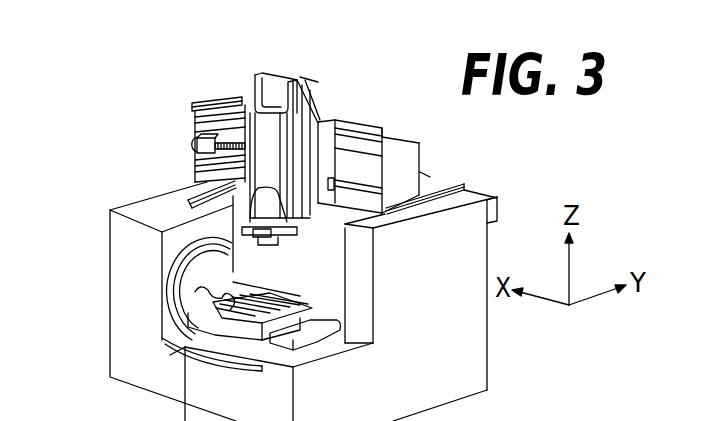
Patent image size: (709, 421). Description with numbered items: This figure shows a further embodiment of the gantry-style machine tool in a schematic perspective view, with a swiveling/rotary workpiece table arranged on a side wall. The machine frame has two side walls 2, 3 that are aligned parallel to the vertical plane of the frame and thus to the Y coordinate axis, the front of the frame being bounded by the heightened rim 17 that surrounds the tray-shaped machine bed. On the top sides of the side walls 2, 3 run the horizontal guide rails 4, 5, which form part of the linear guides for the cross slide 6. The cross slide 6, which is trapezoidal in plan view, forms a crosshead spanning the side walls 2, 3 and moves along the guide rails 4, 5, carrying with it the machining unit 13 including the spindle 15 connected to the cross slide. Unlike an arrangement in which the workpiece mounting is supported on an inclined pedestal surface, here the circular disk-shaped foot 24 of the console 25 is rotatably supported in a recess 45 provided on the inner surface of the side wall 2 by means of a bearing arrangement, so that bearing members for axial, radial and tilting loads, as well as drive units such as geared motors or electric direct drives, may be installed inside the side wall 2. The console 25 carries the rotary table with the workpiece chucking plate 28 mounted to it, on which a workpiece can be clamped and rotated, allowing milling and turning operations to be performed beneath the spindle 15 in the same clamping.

The side wall 2 is at (127, 323).
The side wall 3 is at (427, 307).
The guide rail 4 is at (192, 200).
The guide rail 5 is at (430, 186).
The cross slide 6 is at (403, 163).
The machining unit 13 is at (262, 137).
The work spindle 15 is at (275, 247).
The heightened rim 17 is at (258, 405).
The console foot 24 is at (168, 286).
The console 25 is at (195, 328).
The workpiece chucking plate 28 is at (317, 317).
The recess 45 is at (187, 260).